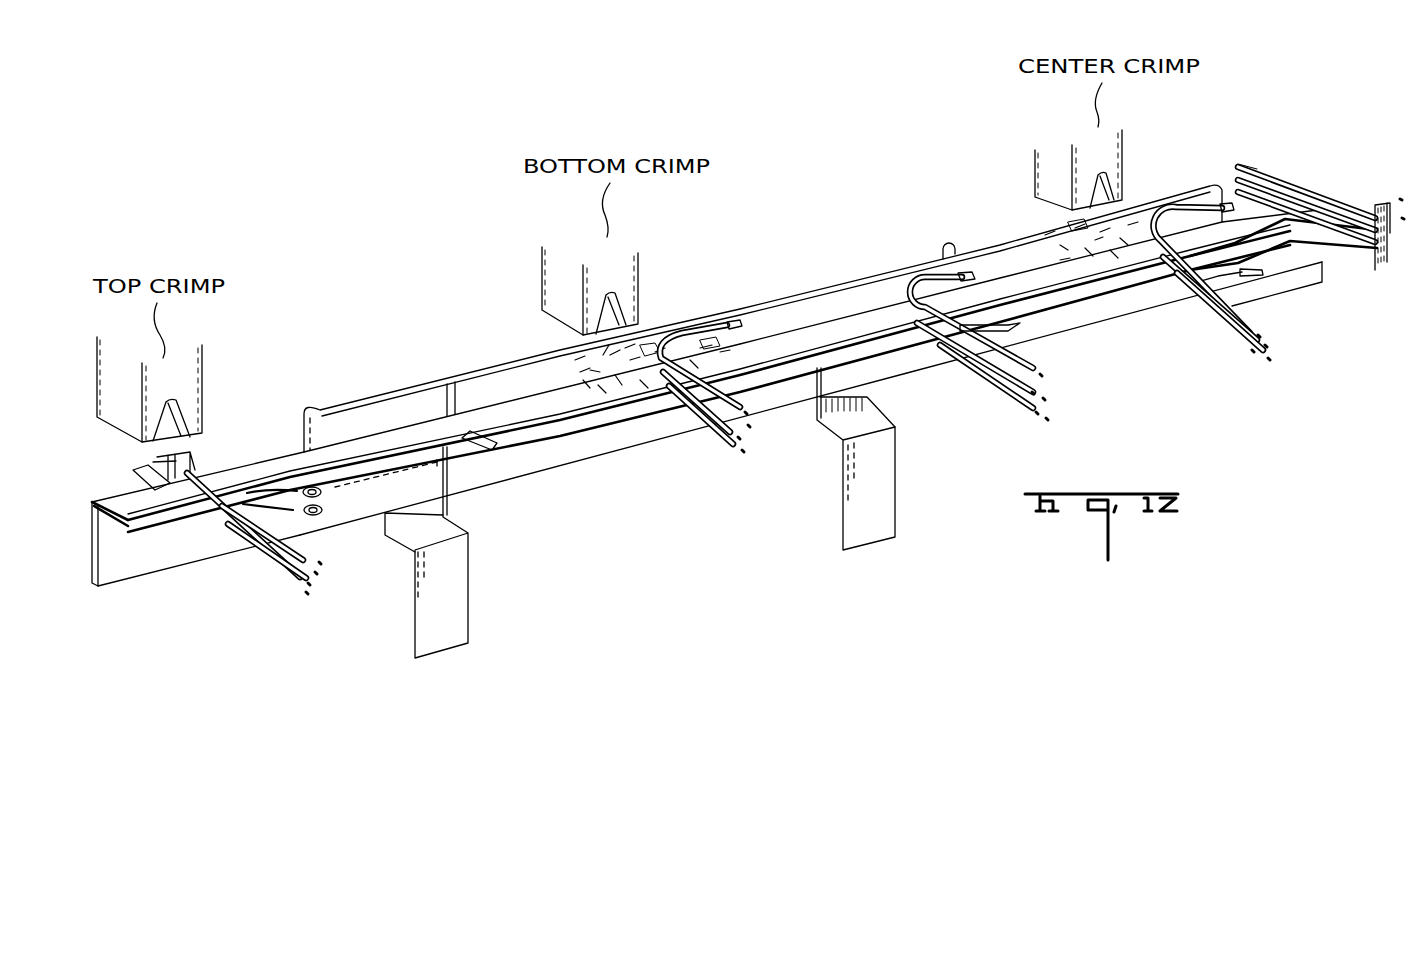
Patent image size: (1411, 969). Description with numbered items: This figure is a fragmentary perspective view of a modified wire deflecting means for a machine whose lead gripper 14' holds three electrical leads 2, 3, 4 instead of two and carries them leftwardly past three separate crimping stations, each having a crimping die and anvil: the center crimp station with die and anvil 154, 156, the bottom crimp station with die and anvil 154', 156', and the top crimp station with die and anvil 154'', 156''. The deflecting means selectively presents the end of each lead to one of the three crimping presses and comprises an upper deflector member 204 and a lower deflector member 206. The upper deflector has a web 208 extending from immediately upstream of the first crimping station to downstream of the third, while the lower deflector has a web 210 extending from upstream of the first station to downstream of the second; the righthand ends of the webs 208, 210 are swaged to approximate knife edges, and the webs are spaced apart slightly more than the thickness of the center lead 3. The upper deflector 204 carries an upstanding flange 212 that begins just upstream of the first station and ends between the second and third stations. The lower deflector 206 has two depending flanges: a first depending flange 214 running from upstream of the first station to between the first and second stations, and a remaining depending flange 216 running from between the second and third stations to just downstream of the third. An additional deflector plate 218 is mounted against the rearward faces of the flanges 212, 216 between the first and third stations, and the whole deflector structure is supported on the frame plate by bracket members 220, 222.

The lead 2 is at (1273, 184).
The center lead 3 is at (1290, 200).
The lead 4 is at (1360, 250).
The lead gripper 14' is at (1374, 202).
The crimping die 154 is at (1105, 170).
The crimping die 154' is at (621, 286).
The crimping die 154'' is at (191, 389).
The anvil 156 is at (1067, 235).
The anvil 156' is at (611, 358).
The anvil 156'' is at (137, 467).
The upper deflector member 204 is at (1042, 305).
The lower deflector member 206 is at (1060, 310).
The web 208 is at (1012, 280).
The web 210 is at (1110, 287).
The upstanding flange 212 is at (870, 300).
The depending flange 214 is at (907, 375).
The depending flange 216 is at (185, 543).
The deflector plate 218 is at (428, 400).
The bracket member 220 is at (862, 512).
The bracket member 222 is at (450, 600).